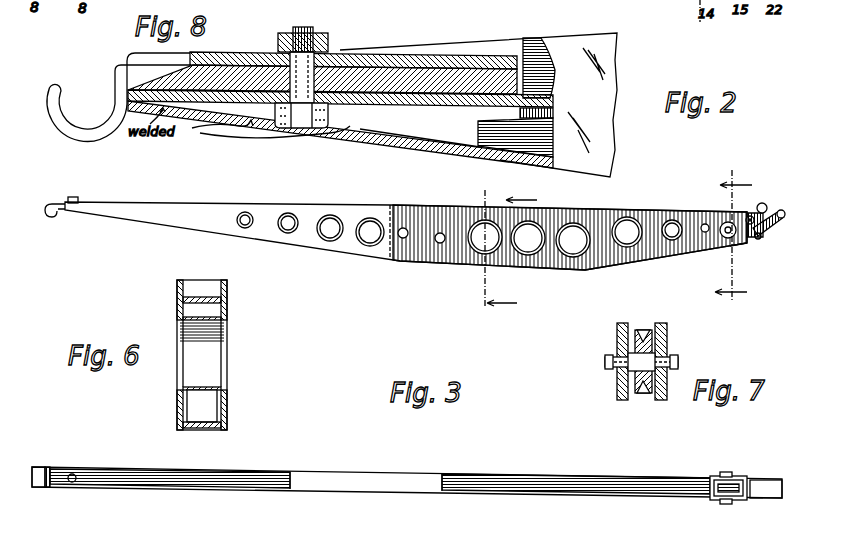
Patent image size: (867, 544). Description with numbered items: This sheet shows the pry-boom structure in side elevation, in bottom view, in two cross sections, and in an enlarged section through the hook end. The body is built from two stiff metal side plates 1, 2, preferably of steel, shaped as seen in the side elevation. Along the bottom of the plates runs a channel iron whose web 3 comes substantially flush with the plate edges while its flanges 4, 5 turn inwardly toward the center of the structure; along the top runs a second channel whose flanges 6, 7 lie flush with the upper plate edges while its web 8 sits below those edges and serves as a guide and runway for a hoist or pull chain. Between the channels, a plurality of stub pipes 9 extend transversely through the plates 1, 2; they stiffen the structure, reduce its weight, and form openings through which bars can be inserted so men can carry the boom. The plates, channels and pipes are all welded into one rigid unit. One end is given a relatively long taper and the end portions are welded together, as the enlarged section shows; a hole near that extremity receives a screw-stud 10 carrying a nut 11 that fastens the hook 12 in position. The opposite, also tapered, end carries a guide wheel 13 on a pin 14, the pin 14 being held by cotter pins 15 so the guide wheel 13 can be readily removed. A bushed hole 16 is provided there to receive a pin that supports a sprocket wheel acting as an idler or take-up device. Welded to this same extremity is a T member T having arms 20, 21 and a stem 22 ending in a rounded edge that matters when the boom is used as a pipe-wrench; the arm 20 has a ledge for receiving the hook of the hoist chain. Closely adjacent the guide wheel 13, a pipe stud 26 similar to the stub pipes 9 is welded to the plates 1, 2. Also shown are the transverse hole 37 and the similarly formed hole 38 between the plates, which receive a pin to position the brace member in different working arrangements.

In FIG. 8, the side plate 1 is at (590, 158).
In FIG. 2, the side plate 1 is at (372, 218).
In FIG. 6, the side plate 1 is at (177, 292).
In FIG. 7, the side plate 1 is at (620, 400).
In FIG. 3, the side plate 1 is at (395, 474).
In FIG. 8, the side plate 2 is at (556, 112).
In FIG. 6, the side plate 2 is at (227, 294).
In FIG. 7, the side plate 2 is at (660, 400).
In FIG. 3, the side plate 2 is at (381, 492).
In FIG. 8, the web 3 is at (440, 152).
In FIG. 6, the web 3 is at (205, 430).
In FIG. 3, the web 3 is at (205, 467).
In FIG. 6, the flange 4 is at (183, 398).
In FIG. 8, the flange 5 is at (488, 135).
In FIG. 6, the flange 5 is at (216, 405).
In FIG. 2, the flange 6 is at (511, 247).
In FIG. 6, the flange 6 is at (185, 283).
In FIG. 8, the flange 7 is at (532, 38).
In FIG. 2, the flange 7 is at (733, 233).
In FIG. 6, the flange 7 is at (222, 283).
In FIG. 8, the web 8 is at (555, 97).
In FIG. 6, the web 8 is at (200, 297).
In FIG. 2, the stub pipe 9 is at (280, 213).
In FIG. 6, the stub pipe 9 is at (225, 323).
In FIG. 8, the screw-stud 10 is at (340, 55).
In FIG. 8, the nut 11 is at (328, 45).
In FIG. 2, the nut 11 is at (78, 200).
In FIG. 8, the hook 12 is at (63, 108).
In FIG. 2, the hook 12 is at (52, 217).
In FIG. 3, the hook 12 is at (42, 467).
In FIG. 7, the guide wheel 13 is at (645, 330).
In FIG. 3, the guide wheel 13 is at (725, 500).
In FIG. 2, the pin 14 is at (722, 245).
In FIG. 7, the pin 14 is at (617, 337).
In FIG. 3, the pin 14 is at (730, 472).
In FIG. 2, the cotter pin 15 is at (725, 223).
In FIG. 7, the cotter pin 15 is at (672, 358).
In FIG. 3, the cotter pin 15 is at (720, 474).
In FIG. 2, the bushed hole 16 is at (757, 207).
In FIG. 2, the arm 20 is at (760, 238).
In FIG. 2, the arm 21 is at (782, 220).
In FIG. 2, the stem 22 is at (768, 218).
In FIG. 2, the pipe stud 26 is at (703, 226).
In FIG. 2, the transverse hole 37 is at (404, 239).
In FIG. 2, the hole 38 is at (440, 244).
In FIG. 2, the T member T is at (780, 210).
In FIG. 3, the T member T is at (758, 485).